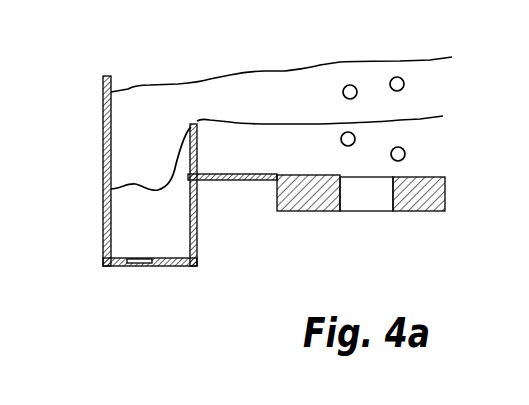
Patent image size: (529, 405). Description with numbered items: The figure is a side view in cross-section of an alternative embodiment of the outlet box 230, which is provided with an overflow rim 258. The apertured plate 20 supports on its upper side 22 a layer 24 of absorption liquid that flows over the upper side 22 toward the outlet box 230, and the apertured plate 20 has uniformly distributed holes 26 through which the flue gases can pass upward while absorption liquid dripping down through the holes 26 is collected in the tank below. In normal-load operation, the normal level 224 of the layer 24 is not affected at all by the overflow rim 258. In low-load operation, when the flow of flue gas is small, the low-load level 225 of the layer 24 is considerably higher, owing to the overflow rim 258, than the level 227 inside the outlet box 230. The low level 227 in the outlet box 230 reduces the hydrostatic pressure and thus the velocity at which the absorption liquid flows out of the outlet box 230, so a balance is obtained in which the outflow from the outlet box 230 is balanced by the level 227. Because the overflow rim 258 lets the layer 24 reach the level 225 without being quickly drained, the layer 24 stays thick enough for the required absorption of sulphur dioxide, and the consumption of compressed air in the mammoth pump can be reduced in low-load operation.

The apertured plate 20 is at (428, 177).
The upper side 22 is at (415, 177).
The layer 24 is at (427, 80).
The holes 26 is at (389, 190).
The normal level 224 is at (158, 86).
The low-load level 225 is at (280, 125).
The level in the outlet box 227 is at (136, 184).
The outlet box 230 is at (103, 218).
The overflow rim 258 is at (197, 153).